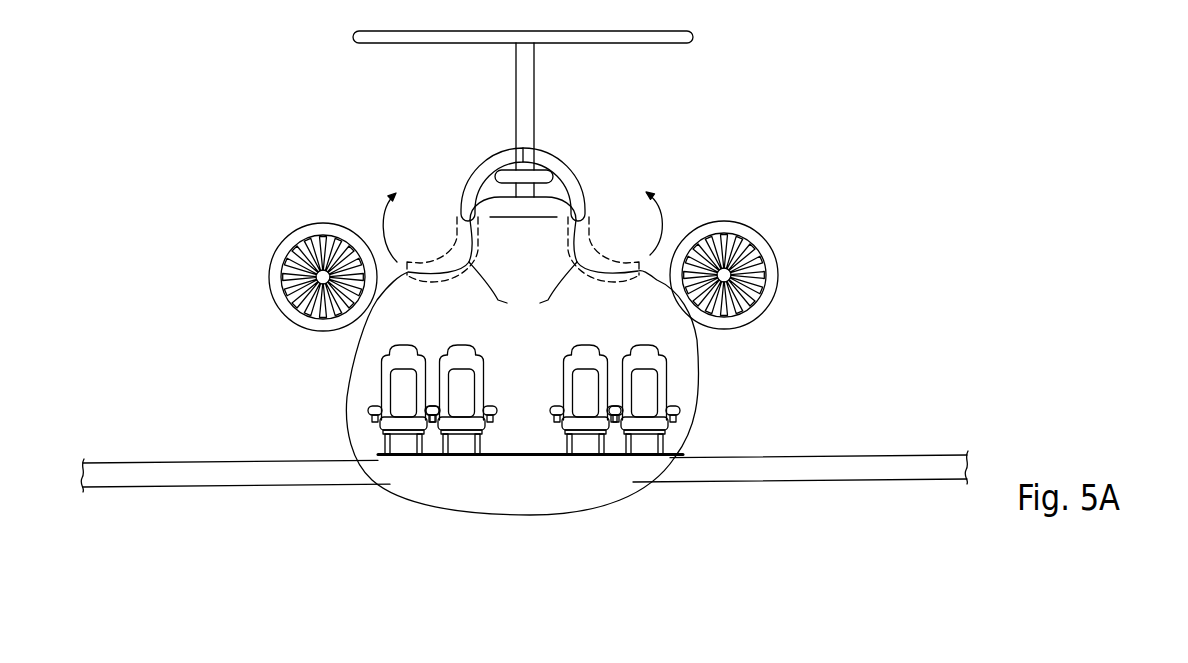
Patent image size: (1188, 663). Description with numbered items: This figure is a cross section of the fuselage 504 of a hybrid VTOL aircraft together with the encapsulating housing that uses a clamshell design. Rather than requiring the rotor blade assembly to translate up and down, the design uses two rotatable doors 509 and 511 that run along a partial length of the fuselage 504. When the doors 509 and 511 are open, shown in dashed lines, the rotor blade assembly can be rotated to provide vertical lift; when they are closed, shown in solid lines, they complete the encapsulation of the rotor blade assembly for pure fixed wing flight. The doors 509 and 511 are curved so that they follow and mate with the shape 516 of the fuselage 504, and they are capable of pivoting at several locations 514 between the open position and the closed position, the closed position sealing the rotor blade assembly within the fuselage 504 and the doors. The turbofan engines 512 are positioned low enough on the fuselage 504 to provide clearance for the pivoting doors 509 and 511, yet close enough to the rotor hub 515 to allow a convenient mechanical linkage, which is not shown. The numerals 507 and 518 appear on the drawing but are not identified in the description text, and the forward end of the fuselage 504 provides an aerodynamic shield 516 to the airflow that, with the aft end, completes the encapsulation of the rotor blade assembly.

The fuselage 504 is at (600, 507).
The rotor hub 507 is at (493, 179).
The rotatable door 509 is at (577, 173).
The rotatable door 511 is at (472, 175).
The turbofan engine 512 is at (776, 260).
The pivot location 514 is at (462, 213).
The rotor hub 515 is at (515, 192).
The fuselage shape 516 is at (523, 287).
The wing 518 is at (244, 462).